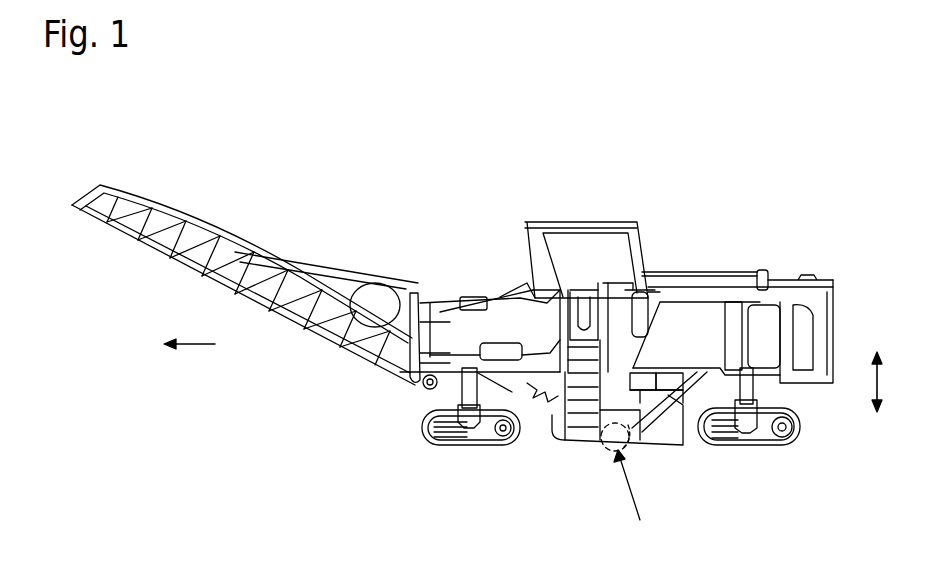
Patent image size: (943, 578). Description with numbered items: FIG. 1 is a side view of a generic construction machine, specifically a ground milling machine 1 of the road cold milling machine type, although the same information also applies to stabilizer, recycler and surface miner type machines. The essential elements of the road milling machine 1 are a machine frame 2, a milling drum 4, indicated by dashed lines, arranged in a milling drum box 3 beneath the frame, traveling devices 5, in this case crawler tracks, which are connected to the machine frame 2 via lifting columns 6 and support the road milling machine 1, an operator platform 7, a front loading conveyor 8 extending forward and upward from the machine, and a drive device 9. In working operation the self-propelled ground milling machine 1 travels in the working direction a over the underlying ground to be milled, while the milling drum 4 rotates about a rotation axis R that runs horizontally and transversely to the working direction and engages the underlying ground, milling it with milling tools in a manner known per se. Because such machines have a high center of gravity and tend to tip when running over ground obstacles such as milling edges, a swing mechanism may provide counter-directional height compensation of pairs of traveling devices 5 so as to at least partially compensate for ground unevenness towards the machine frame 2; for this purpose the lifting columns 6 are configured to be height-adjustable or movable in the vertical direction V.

The ground milling machine 1 is at (620, 122).
The machine frame 2 is at (450, 360).
The milling drum box 3 is at (580, 435).
The milling drum 4 is at (627, 498).
The traveling devices 5 is at (437, 438).
The lifting columns 6 is at (462, 387).
The operator platform 7 is at (617, 258).
The front loading conveyor 8 is at (207, 237).
The drive device 9 is at (770, 328).
The rotation axis R is at (615, 423).
The vertical direction V is at (875, 365).
The working direction a is at (181, 344).